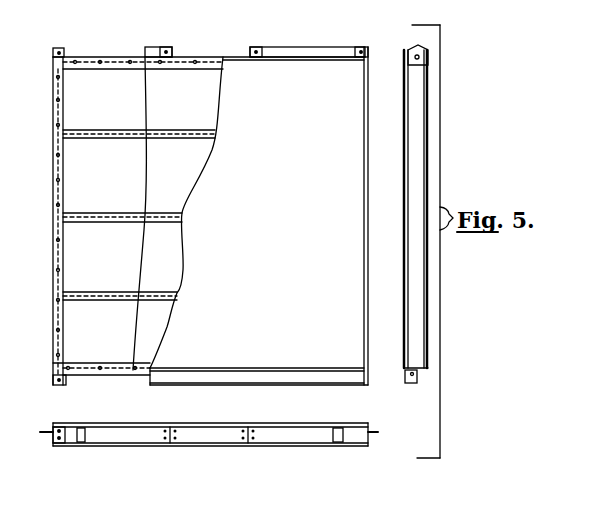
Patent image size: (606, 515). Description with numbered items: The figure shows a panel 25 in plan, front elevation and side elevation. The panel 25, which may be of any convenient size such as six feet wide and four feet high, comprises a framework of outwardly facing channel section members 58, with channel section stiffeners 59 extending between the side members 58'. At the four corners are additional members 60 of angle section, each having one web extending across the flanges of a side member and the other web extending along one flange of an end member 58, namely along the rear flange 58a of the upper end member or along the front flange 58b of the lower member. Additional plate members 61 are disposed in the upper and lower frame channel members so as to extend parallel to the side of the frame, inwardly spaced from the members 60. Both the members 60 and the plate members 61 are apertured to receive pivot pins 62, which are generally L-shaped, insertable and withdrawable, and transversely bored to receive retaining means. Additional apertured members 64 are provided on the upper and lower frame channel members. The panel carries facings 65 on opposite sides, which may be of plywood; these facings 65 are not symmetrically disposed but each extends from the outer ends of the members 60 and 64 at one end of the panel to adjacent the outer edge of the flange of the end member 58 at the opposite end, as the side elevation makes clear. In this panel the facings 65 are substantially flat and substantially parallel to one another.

The panel 25 is at (273, 353).
The channel section member 58 is at (210, 256).
The side member 58' is at (77, 221).
The rear flange 58a is at (300, 55).
The front flange 58b is at (430, 52).
The channel section stiffener 59 is at (117, 133).
The additional member 60 is at (64, 53).
The additional plate member 61 is at (80, 443).
The pivot pin 62 is at (50, 436).
The additional apertured member 64 is at (171, 51).
The facing 65 is at (194, 113).